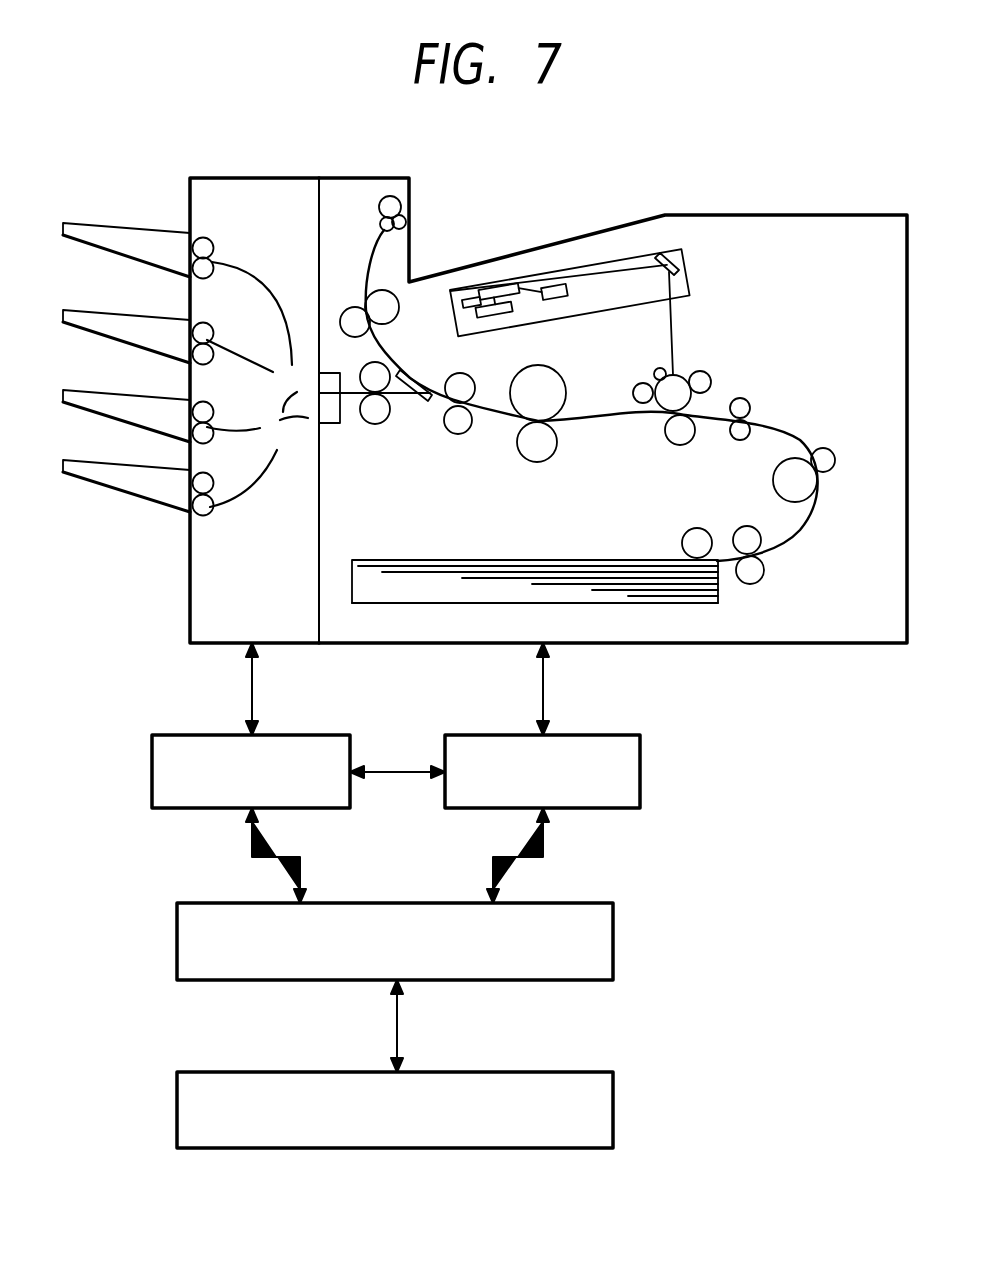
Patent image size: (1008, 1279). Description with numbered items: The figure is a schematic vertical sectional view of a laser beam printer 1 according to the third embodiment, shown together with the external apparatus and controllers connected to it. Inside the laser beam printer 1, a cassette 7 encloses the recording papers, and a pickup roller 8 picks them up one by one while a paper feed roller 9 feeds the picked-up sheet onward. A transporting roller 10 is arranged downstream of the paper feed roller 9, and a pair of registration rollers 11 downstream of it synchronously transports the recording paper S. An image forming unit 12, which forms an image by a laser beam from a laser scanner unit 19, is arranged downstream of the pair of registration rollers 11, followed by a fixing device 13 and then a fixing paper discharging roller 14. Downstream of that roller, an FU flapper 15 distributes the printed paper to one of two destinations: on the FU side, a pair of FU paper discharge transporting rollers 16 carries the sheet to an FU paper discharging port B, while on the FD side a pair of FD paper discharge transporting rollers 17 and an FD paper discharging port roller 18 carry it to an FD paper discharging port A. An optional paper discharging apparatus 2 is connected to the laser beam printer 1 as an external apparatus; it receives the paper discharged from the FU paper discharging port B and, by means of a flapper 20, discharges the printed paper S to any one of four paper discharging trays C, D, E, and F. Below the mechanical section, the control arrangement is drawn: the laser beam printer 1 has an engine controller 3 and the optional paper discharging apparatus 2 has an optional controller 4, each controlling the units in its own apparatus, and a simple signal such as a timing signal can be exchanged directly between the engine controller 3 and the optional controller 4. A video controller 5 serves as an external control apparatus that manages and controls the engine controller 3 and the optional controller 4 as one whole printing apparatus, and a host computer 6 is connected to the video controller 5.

The laser beam printer 1 is at (785, 215).
The optional paper discharging apparatus 2 is at (188, 575).
The engine controller 3 is at (640, 773).
The optional controller 4 is at (152, 773).
The video controller 5 is at (613, 938).
The host computer 6 is at (613, 1108).
The cassette 7 is at (688, 603).
The pickup roller 8 is at (683, 537).
The paper feed roller 9 is at (740, 527).
The transporting roller 10 is at (770, 473).
The pair of registration rollers 11 is at (745, 400).
The image forming unit 12 is at (683, 372).
The fixing device 13 is at (565, 381).
The fixing paper discharging roller 14 is at (470, 435).
The FU flapper 15 is at (423, 403).
The pair of FU paper discharge transporting rollers 16 is at (375, 425).
The pair of FD paper discharge transporting rollers 17 is at (352, 310).
The FD paper discharging port roller 18 is at (390, 197).
The laser scanner unit 19 is at (688, 263).
The flapper 20 is at (297, 425).
The FD paper discharging port A is at (410, 225).
The FU paper discharging port B is at (333, 425).
The paper discharging tray C is at (85, 226).
The paper discharging tray D is at (80, 312).
The paper discharging tray E is at (80, 392).
The paper discharging tray F is at (78, 462).
The recording paper S is at (570, 560).